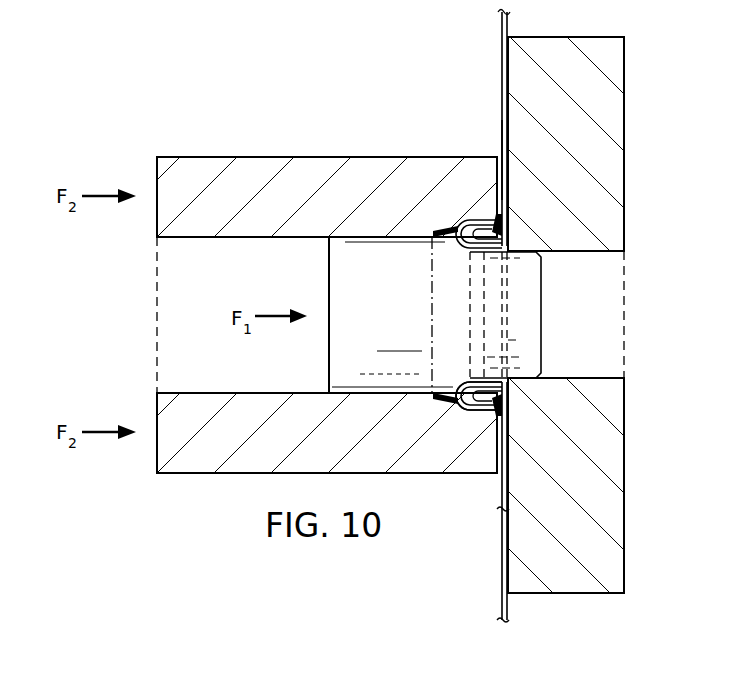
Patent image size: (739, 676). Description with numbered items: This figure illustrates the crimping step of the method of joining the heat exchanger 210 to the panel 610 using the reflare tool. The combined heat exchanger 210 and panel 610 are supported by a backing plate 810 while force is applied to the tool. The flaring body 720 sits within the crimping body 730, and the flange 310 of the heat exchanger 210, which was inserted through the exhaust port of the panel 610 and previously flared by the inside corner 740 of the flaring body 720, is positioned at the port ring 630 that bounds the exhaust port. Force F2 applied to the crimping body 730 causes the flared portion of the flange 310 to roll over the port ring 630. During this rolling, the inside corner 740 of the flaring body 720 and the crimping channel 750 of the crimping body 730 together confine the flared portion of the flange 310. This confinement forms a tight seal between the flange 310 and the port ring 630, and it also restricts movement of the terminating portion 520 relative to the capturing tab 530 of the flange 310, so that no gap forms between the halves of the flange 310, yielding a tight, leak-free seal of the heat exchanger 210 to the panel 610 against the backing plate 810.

The heat exchanger 210 is at (502, 52).
The backing plate 810 is at (625, 122).
The crimping body 730 is at (330, 157).
The panel 610 is at (500, 142).
The crimping channel 750 is at (438, 226).
The flange 310 is at (450, 226).
The capturing tab 530 is at (506, 224).
The terminating portion 520 is at (507, 240).
The flaring body 720 is at (329, 278).
The inside corner 740 is at (447, 243).
The port ring 630 is at (500, 410).